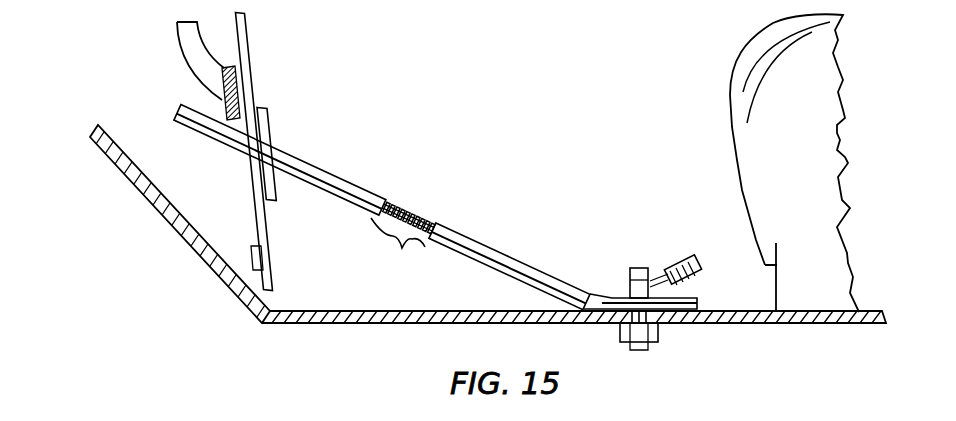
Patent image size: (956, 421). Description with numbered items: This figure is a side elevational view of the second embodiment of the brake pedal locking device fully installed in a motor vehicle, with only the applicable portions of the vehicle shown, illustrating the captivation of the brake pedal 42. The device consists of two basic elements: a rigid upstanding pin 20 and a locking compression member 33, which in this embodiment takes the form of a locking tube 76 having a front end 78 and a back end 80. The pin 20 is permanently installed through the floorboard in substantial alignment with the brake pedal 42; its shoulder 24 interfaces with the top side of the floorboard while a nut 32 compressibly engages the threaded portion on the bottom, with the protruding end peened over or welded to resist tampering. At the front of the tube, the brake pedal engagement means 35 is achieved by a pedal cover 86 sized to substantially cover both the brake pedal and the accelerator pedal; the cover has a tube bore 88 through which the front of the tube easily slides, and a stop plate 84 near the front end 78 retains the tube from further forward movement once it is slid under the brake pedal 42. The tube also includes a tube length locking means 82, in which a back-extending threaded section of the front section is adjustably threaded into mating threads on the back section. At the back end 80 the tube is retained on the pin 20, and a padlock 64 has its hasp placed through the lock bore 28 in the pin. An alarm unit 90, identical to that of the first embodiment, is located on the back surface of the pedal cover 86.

The brake pedal 42 is at (182, 46).
The brake pedal engagement means 35 is at (249, 53).
The pedal cover 86 is at (254, 220).
The stop plate 84 is at (264, 131).
The tube bore 88 is at (248, 156).
The alarm unit 90 is at (248, 262).
The front end 78 is at (318, 181).
The locking compression member 33 is at (437, 177).
The locking tube 76 is at (408, 217).
The tube length locking means 82 is at (391, 249).
The back end 80 is at (482, 243).
The lock bore 28 is at (622, 283).
The rigid upstanding pin 20 is at (646, 270).
The shoulder 24 is at (628, 323).
The nut 32 is at (660, 338).
The padlock 64 is at (727, 228).